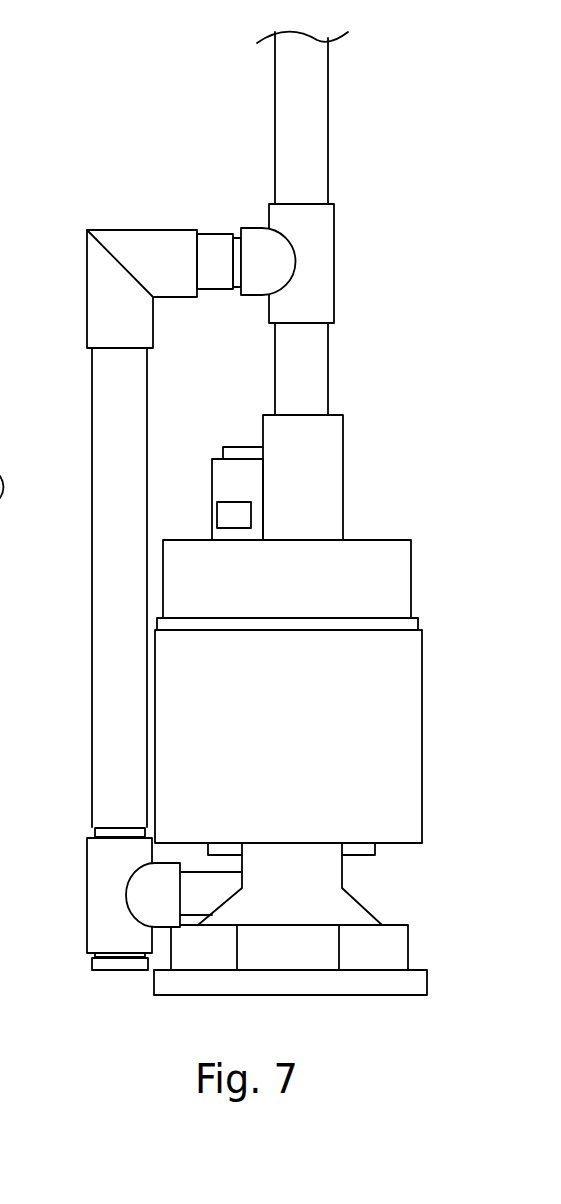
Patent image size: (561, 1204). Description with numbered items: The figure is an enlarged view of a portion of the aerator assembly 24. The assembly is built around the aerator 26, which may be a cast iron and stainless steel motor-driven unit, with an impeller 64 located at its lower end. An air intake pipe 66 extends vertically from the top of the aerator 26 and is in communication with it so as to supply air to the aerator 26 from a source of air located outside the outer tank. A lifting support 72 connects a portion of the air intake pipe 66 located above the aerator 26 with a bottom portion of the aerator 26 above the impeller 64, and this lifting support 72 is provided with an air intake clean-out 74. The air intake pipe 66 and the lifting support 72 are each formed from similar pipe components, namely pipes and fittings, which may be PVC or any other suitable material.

The aerator assembly 24 is at (186, 83).
The air intake pipe 66 is at (329, 103).
The lifting support 72 is at (87, 291).
The aerator 26 is at (423, 672).
The impeller 64 is at (309, 995).
The air intake clean-out 74 is at (124, 970).